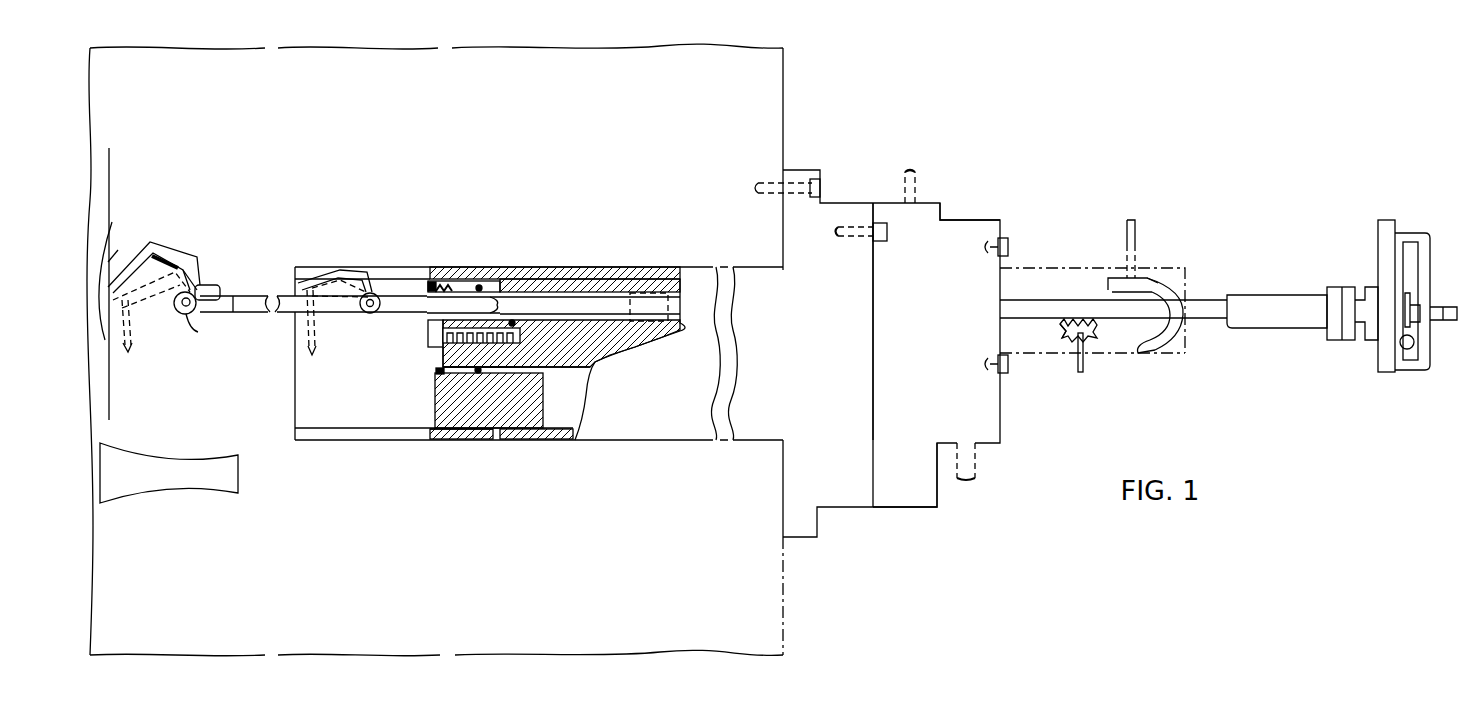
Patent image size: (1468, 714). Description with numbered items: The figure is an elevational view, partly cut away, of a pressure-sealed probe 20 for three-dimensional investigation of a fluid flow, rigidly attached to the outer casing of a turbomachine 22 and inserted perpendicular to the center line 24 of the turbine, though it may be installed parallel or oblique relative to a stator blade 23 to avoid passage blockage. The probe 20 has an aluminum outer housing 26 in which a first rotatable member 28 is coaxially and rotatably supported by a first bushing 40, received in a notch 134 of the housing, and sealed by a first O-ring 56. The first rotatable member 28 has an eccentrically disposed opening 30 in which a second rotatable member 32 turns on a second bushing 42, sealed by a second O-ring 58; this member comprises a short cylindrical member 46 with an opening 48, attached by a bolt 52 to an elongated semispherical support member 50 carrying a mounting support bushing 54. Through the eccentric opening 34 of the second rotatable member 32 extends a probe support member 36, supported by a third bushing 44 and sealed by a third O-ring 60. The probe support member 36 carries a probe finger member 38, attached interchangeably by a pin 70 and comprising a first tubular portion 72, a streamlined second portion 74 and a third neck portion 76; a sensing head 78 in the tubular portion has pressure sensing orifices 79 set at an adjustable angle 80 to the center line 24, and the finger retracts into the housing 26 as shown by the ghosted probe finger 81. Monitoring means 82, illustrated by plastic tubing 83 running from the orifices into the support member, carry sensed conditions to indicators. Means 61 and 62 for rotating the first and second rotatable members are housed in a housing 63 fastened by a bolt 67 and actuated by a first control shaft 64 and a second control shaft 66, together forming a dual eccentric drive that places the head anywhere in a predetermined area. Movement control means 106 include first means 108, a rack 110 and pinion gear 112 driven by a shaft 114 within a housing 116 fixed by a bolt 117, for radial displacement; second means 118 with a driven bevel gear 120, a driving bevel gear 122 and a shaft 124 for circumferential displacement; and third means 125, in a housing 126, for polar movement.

The probe 20 is at (812, 608).
The turbomachine 22 is at (448, 586).
The stator blade 23 is at (800, 180).
The center line 24 is at (110, 183).
The outer housing 26 is at (533, 441).
The first rotatable member 28 is at (537, 393).
The eccentrically disposed opening 30 is at (440, 396).
The second rotatable member 32 is at (530, 361).
The eccentrically disposed opening 34 is at (428, 324).
The probe support member 36 is at (605, 305).
The probe finger member 38 is at (141, 340).
The first bushing 40 is at (427, 280).
The second bushing 42 is at (430, 282).
The third bushing 44 is at (432, 306).
The short cylindrical member 46 is at (438, 361).
The opening 48 is at (514, 321).
The elongated semispherical support member 50 is at (578, 347).
The bolt 52 is at (443, 336).
The mounting support bushing 54 is at (648, 300).
The first O-ring 56 is at (445, 285).
The second O-ring 58 is at (480, 288).
The third O-ring 60 is at (498, 299).
The means for controlling rotation of the first rotatable member 61 is at (904, 257).
The means for controlling rotation of the second rotatable member 62 is at (951, 432).
The housing 63 is at (968, 218).
The first control shaft 64 is at (918, 182).
The second control shaft 66 is at (975, 466).
The bolt 67 is at (857, 238).
The pin 70 is at (190, 318).
The first tubular portion 72 is at (150, 244).
The streamlined second portion 74 is at (170, 256).
The third neck portion 76 is at (197, 263).
The sensing head 78 is at (120, 262).
The pressure sensing orifice 79 is at (113, 222).
The predetermined angle 80 is at (105, 340).
The ghosted probe finger 81 is at (325, 352).
The means for monitoring the conditions sensed 82 is at (246, 269).
The plastic tubing 83 is at (212, 291).
The means for controlling the movements of the probe finger 106 is at (1013, 342).
The first means for controlling radial displacement 108 is at (1061, 444).
The rack 110 is at (1097, 336).
The pinion gear 112 is at (1068, 339).
The shaft 114 is at (1078, 371).
The housing 116 is at (1160, 356).
The bolt 117 is at (1003, 240).
The second means for controlling angular displacement 118 is at (1158, 265).
The driven bevel gear 120 is at (1150, 345).
The driving bevel gear 122 is at (1116, 278).
The shaft 124 is at (1137, 229).
The third means for controlling movement in the polar direction 125 is at (1383, 406).
The housing 126 is at (1260, 339).
The notch 134 is at (497, 441).